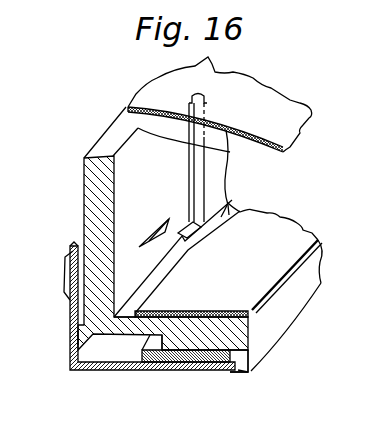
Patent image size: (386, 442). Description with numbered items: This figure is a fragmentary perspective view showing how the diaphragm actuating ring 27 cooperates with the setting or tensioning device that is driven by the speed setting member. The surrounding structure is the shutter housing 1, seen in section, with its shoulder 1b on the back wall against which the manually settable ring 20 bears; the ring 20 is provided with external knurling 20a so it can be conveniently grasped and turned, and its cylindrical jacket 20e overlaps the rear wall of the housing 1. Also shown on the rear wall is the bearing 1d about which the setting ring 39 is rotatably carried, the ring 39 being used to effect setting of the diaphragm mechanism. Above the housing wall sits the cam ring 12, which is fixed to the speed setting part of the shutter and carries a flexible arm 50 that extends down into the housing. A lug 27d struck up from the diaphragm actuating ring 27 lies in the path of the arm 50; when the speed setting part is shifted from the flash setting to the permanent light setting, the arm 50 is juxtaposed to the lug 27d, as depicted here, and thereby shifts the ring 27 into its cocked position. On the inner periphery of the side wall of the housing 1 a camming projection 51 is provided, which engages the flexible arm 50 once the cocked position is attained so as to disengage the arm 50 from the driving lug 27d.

The shutter housing 1 is at (103, 144).
The shoulder 1b is at (238, 373).
The bearing 1d is at (232, 357).
The cam ring 12 is at (253, 100).
The manually settable ring 20 is at (101, 371).
The external knurling 20a is at (66, 287).
The cylindrical jacket 20e is at (72, 336).
The diaphragm actuating ring 27 is at (244, 274).
The lug 27d is at (255, 213).
The setting ring 39 is at (185, 366).
The flexible arm 50 is at (197, 143).
The camming projection 51 is at (156, 226).